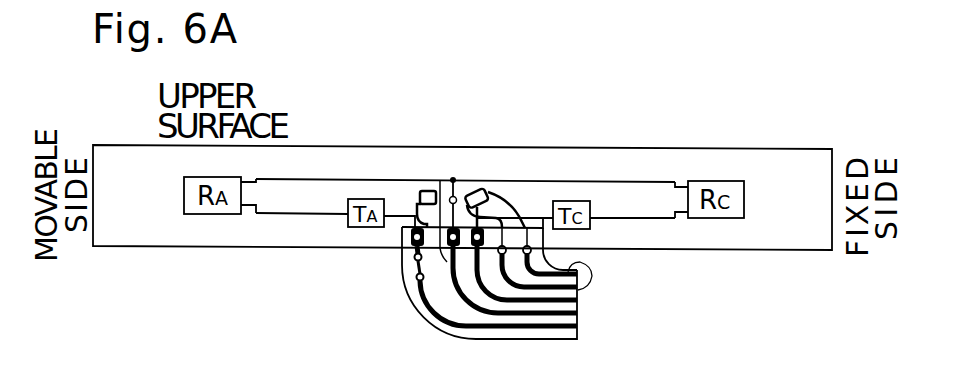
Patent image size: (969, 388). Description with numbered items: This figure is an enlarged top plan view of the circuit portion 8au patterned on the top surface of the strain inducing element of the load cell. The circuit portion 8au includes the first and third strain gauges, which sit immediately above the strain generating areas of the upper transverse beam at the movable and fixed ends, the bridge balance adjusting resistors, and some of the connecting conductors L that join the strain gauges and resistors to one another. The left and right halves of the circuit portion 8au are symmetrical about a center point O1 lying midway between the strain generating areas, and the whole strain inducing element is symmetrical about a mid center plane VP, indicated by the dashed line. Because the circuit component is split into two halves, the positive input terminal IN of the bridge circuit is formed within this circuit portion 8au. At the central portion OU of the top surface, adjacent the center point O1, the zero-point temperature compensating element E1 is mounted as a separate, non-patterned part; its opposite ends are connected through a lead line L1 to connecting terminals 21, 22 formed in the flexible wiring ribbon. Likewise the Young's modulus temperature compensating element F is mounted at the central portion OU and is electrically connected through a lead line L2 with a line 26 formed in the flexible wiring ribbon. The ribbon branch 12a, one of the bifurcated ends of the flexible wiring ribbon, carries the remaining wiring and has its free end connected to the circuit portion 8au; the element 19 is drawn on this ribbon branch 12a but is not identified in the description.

The circuit portion 8au is at (727, 156).
The ribbon branch 12a is at (430, 316).
The wiring trace 19 is at (430, 303).
The connecting terminal 21 is at (412, 258).
The connecting terminal 22 is at (414, 280).
The line 26 is at (586, 263).
The connecting conductor L is at (631, 180).
The lead line L1 is at (410, 240).
The lead line L2 is at (497, 188).
The zero-point temperature compensating element E1 is at (421, 191).
The central portion OU is at (440, 180).
The mid center plane VP is at (453, 178).
The positive input terminal IN is at (456, 197).
The center point O1 is at (475, 190).
The Young's modulus temperature compensating element F is at (484, 188).